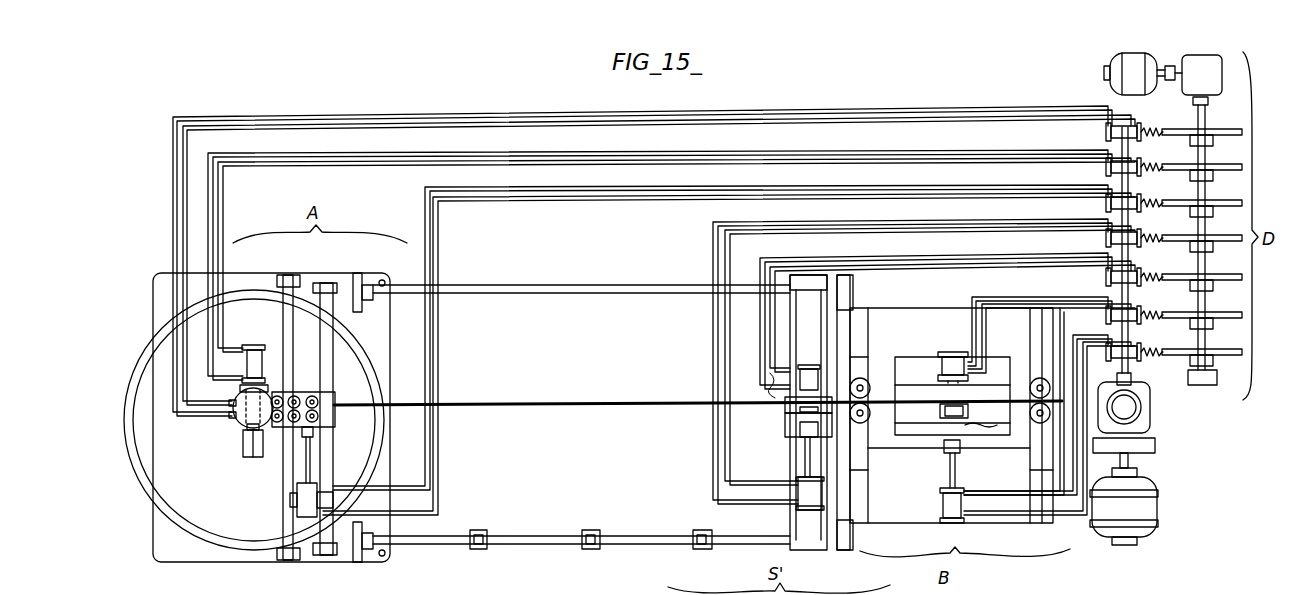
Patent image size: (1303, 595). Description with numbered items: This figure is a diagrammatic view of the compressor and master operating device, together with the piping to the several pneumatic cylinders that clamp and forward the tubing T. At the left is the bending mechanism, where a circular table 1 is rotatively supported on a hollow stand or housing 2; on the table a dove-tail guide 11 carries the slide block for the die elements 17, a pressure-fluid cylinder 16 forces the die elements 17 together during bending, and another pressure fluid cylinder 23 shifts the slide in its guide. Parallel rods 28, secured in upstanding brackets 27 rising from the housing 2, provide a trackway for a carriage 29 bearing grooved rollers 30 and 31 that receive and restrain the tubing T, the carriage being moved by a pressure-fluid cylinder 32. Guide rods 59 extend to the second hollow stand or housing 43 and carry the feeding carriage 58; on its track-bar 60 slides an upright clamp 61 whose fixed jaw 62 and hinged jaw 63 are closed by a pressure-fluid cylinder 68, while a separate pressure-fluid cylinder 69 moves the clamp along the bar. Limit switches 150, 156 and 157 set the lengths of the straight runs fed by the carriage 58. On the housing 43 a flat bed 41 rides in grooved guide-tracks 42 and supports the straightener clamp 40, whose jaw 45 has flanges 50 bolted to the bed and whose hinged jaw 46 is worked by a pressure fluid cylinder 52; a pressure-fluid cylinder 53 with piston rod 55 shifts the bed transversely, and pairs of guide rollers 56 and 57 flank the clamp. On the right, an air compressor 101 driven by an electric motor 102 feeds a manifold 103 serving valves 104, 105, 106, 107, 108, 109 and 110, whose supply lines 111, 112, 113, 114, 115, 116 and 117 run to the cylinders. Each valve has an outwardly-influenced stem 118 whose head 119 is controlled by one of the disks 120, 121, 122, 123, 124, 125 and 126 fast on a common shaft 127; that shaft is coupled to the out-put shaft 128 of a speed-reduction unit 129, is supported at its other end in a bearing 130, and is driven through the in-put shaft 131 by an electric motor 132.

The circular table 1 is at (254, 420).
The hollow stand or housing 2 is at (249, 273).
The dove-tail guide 11 is at (252, 457).
The pressure-fluid cylinder 16 is at (238, 423).
The die elements 17 is at (238, 393).
The pressure fluid cylinder 23 is at (253, 345).
The upstanding brackets 27 is at (288, 277).
The parallel rods 28 is at (322, 310).
The carriage 29 is at (336, 400).
The rollers 30 is at (285, 397).
The rollers 31 is at (303, 428).
The pressure-fluid cylinder 32 is at (297, 502).
The guide rods 59 is at (512, 293).
The tubing T is at (523, 404).
The limit switch 156 is at (478, 530).
The limit switch 157 is at (592, 530).
The limit switch 150 is at (703, 530).
The track-bar 60 is at (826, 303).
The pressure-fluid cylinder 68 is at (808, 365).
The jaw 62 is at (786, 403).
The jaw 63 is at (786, 420).
The upright clamp 61 is at (795, 443).
The pressure-fluid cylinder 69 is at (800, 505).
The carriage 58 is at (785, 336).
The hollow stand or housing 43 is at (895, 523).
The flat bed 41 is at (880, 443).
The grooved guide-tracks 42 is at (850, 495).
The flanges 50 is at (908, 357).
The pressure fluid cylinder 52 is at (953, 357).
The jaw 45 is at (1000, 377).
The jaw 46 is at (1005, 410).
The upright clamp 40 is at (980, 430).
The guide rollers 56 is at (868, 396).
The guide rollers 57 is at (1038, 378).
The piston rod 55 is at (950, 471).
The pressure-fluid cylinder 53 is at (943, 503).
The supply line 115 is at (1016, 515).
The supply line 114 is at (1020, 299).
The supply line 111 is at (860, 112).
The supply line 112 is at (860, 151).
The supply line 113 is at (863, 160).
The supply line 117 is at (863, 196).
The supply lines 116 is at (948, 232).
The manifold 103 is at (1132, 370).
The valve 104 is at (1106, 133).
The valve 105 is at (1106, 168).
The valve 106 is at (1106, 204).
The valve 110 is at (1106, 239).
The valve 109 is at (1106, 278).
The valve 107 is at (1106, 316).
The valve 108 is at (1108, 353).
The stem 118 is at (1150, 136).
The heads 119 is at (1154, 172).
The common shaft 127 is at (1206, 113).
The disk 120 is at (1226, 135).
The disk 121 is at (1226, 170).
The disk 122 is at (1226, 206).
The disk 123 is at (1226, 241).
The disk 124 is at (1226, 280).
The disk 125 is at (1226, 318).
The disk 126 is at (1230, 355).
The bearing 130 is at (1206, 384).
The electric motor 132 is at (1118, 60).
The in-put shaft 131 is at (1172, 66).
The speed-reduction unit 129 is at (1202, 75).
The out-put shaft 128 is at (1193, 101).
The fluid or air compressor 101 is at (1130, 408).
The electric motor 102 is at (1150, 505).